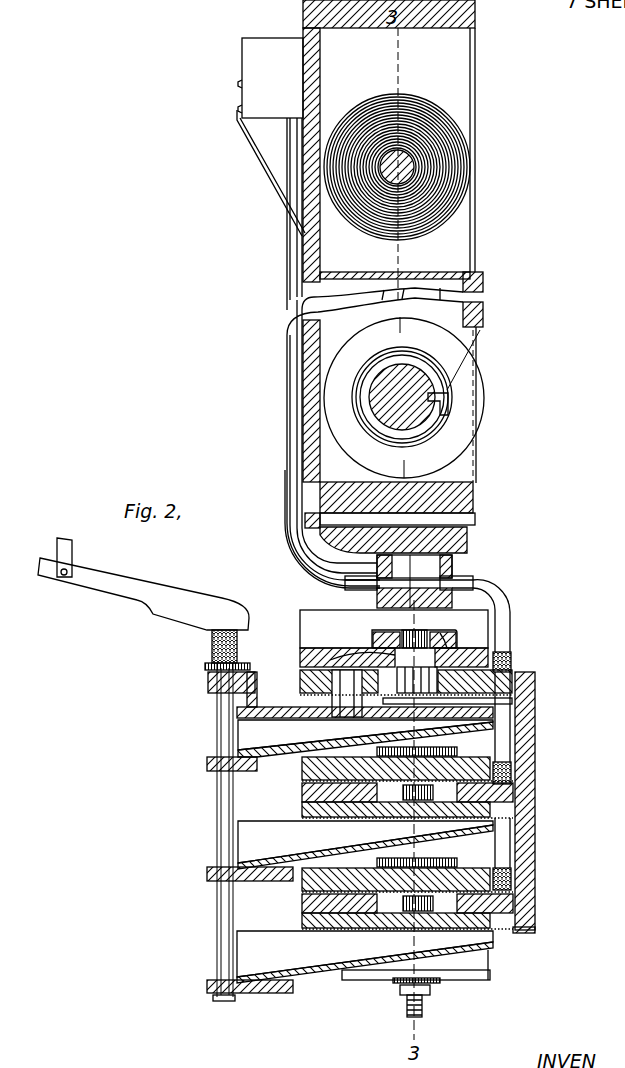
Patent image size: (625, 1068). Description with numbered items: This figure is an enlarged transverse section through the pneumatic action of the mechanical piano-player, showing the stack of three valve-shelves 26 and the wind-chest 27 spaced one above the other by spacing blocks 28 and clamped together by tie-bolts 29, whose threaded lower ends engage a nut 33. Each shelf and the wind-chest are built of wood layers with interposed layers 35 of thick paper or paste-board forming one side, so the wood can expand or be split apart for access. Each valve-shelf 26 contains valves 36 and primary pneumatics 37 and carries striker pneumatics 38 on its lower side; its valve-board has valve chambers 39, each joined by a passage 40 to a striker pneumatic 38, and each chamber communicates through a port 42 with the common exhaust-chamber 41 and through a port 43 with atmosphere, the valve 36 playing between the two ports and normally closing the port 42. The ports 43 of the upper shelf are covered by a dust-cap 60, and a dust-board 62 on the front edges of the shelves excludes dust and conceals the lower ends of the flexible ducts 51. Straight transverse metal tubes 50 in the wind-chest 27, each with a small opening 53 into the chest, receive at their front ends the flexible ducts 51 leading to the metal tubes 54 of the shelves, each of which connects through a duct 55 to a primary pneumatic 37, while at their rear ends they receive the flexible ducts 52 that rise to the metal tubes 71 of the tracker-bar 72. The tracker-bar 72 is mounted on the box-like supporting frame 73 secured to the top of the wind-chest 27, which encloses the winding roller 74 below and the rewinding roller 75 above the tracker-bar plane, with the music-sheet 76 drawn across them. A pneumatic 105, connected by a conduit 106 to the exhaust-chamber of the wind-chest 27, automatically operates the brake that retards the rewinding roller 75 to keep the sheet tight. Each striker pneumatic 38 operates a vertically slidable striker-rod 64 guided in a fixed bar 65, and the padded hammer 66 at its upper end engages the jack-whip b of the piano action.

The pneumatic 105 is at (257, 55).
The supporting frame 73 is at (322, 62).
The rewinding roller 75 is at (415, 168).
The music-sheet 76 is at (478, 228).
The metal tubes 71 is at (443, 290).
The tracker-bar 72 is at (484, 283).
The conduit 106 is at (300, 293).
The winding roller 74 is at (412, 388).
The interposed layers 35 is at (473, 513).
The flexible ducts 52 is at (292, 532).
The wind-chest 27 is at (448, 573).
The opening 53 is at (414, 566).
The metal tubes 50 is at (484, 578).
The dust-cap 60 is at (443, 633).
The flexible ducts 51 is at (511, 607).
The spacing blocks 28 is at (317, 625).
The valve chambers 39 is at (385, 660).
The valves 36 is at (396, 646).
The port 43 is at (418, 645).
The primary pneumatics 37 is at (448, 652).
The exhaust-chamber 41 is at (447, 683).
The metal tubes 54 is at (520, 667).
The duct 55 is at (535, 700).
The valve-shelves 26 is at (315, 685).
The port 42 is at (408, 680).
The passage 40 is at (380, 723).
The jack-whips b is at (152, 588).
The padded hammers 66 is at (212, 640).
The fixed bar 65 is at (208, 680).
The striker-rods 64 is at (217, 707).
The striker pneumatics 38 is at (268, 738).
The dust-board 62 is at (535, 920).
The nut 33 is at (405, 992).
The tie-bolts 29 is at (427, 1013).